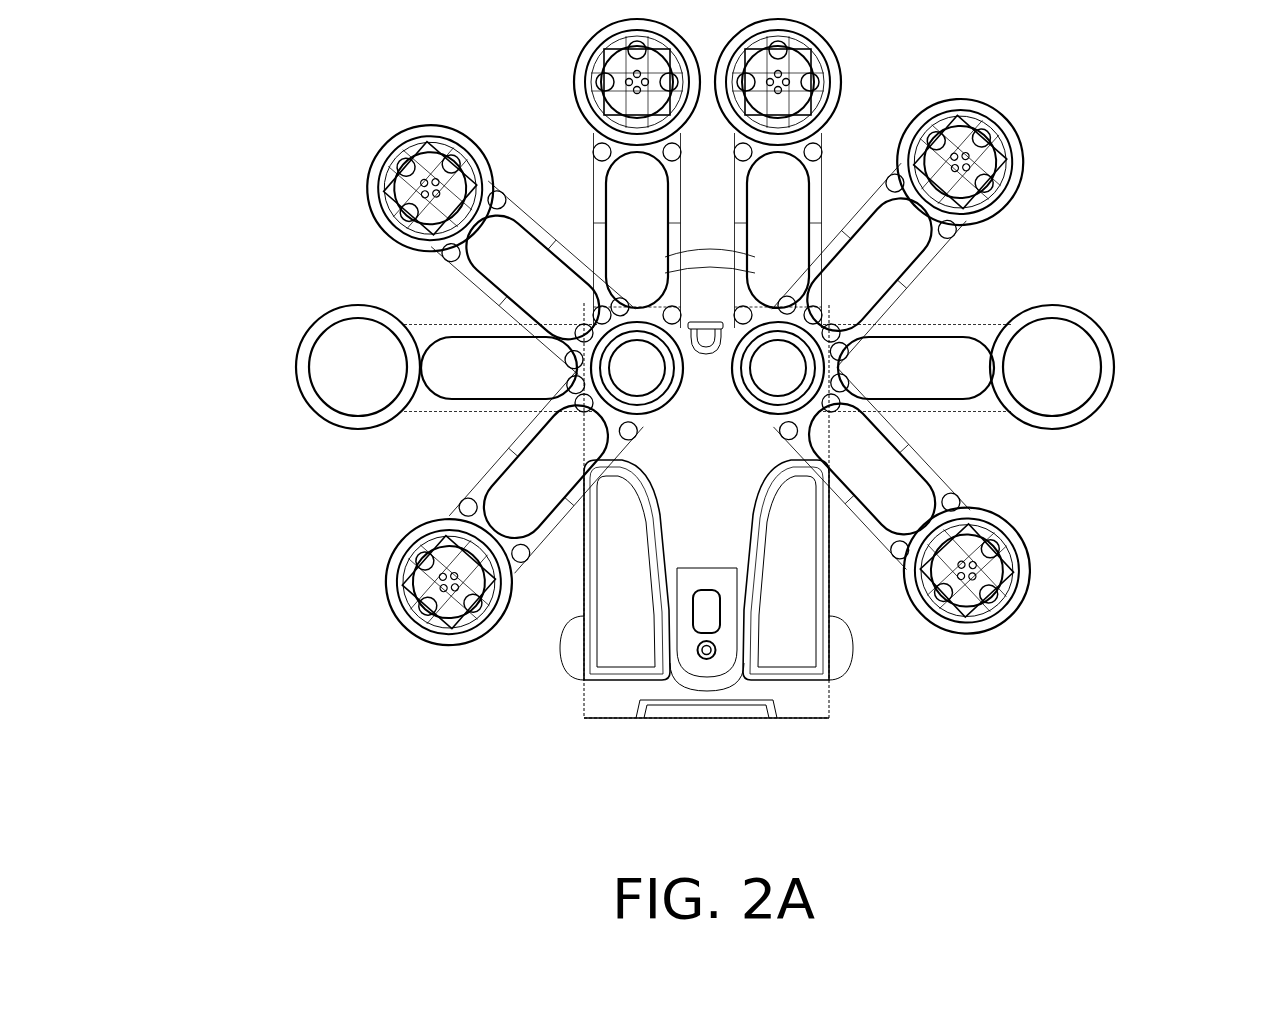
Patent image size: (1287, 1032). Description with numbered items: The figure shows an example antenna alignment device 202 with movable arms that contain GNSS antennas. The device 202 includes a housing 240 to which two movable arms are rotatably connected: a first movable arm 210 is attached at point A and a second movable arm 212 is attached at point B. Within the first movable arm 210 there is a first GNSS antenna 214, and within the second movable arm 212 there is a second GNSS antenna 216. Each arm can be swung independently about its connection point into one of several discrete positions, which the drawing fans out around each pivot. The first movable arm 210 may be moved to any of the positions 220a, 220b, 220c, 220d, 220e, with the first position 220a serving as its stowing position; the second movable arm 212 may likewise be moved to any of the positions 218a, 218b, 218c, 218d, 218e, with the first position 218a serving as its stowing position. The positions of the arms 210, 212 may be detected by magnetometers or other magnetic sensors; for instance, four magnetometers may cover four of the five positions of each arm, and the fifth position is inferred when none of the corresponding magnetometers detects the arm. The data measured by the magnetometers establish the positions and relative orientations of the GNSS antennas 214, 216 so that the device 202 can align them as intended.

The antenna alignment device 202 is at (738, 854).
The first movable arm 210 is at (1057, 368).
The second movable arm 212 is at (302, 367).
The first GNSS antenna 214 is at (1000, 528).
The second GNSS antenna 216 is at (405, 615).
The first position of second movable arm 218a is at (580, 704).
The position of second movable arm 218b is at (378, 586).
The position of second movable arm 218c is at (307, 424).
The position of second movable arm 218d is at (383, 257).
The position of second movable arm 218e is at (560, 92).
The first position of first movable arm 220a is at (888, 702).
The position of first movable arm 220b is at (1025, 668).
The position of first movable arm 220c is at (1100, 459).
The position of first movable arm 220d is at (1080, 206).
The position of first movable arm 220e is at (898, 92).
The housing 240 is at (710, 468).
The point A is at (775, 367).
The point B is at (638, 370).